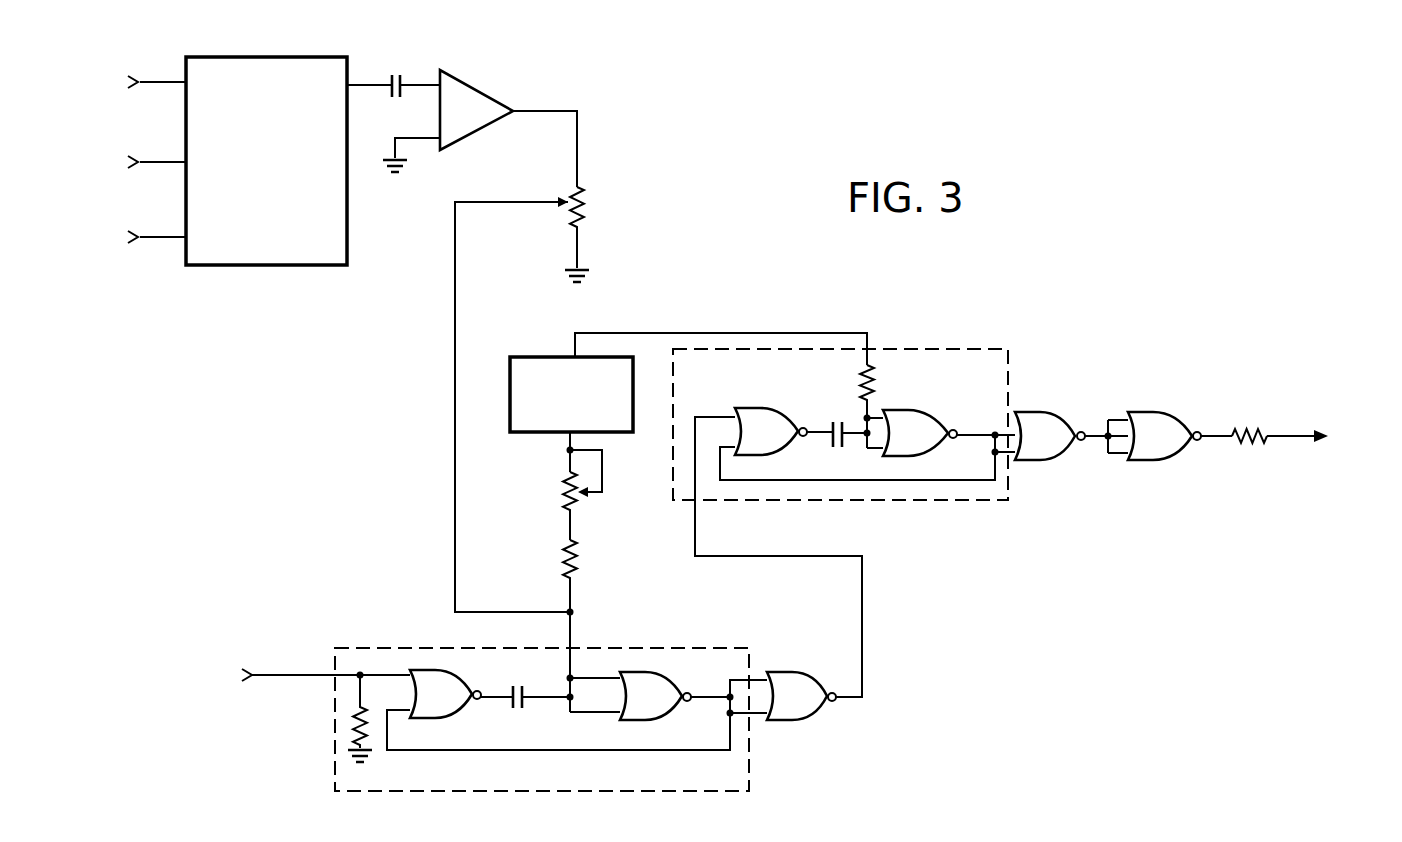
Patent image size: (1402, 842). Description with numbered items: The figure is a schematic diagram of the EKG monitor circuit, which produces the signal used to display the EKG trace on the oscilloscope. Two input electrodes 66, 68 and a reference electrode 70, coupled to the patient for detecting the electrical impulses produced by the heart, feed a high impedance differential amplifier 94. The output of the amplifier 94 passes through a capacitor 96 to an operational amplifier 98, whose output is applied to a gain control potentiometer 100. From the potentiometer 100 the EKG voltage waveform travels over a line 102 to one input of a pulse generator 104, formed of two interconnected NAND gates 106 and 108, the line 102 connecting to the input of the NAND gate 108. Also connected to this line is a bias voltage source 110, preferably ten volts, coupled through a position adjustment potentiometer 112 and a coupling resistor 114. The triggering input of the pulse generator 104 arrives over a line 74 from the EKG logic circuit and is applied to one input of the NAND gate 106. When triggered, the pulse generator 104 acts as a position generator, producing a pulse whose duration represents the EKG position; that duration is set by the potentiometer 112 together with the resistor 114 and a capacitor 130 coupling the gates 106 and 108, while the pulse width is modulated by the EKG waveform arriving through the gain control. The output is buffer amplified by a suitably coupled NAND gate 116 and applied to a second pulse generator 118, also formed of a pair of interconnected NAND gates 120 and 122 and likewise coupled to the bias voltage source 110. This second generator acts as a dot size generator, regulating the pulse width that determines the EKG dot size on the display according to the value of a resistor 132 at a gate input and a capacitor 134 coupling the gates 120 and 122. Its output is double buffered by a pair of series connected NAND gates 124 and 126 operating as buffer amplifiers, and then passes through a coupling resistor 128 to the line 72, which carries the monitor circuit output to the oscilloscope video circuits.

The input electrode 66 is at (159, 80).
The input electrode 68 is at (171, 237).
The reference electrode 70 is at (164, 161).
The line 72 is at (1289, 431).
The line 74 is at (287, 677).
The high impedance differential amplifier 94 is at (262, 57).
The capacitor 96 is at (400, 73).
The operational amplifier 98 is at (475, 92).
The gain control potentiometer 100 is at (562, 216).
The line 102 is at (455, 488).
The pulse generator 104 is at (672, 647).
The NAND gate 106 is at (577, 710).
The NAND gate 108 is at (649, 696).
The bias voltage source 110 is at (515, 432).
The position adjustment potentiometer 112 is at (565, 493).
The coupling resistor 114 is at (580, 554).
The NAND gate 116 is at (778, 568).
The pulse generator 118 is at (933, 351).
The NAND gate 120 is at (857, 444).
The NAND gate 122 is at (940, 433).
The NAND gate 124 is at (1071, 436).
The NAND gate 126 is at (1180, 436).
The coupling resistor 128 is at (1248, 429).
The capacitor 130 is at (524, 705).
The resistor 132 is at (873, 378).
The capacitor 134 is at (831, 444).